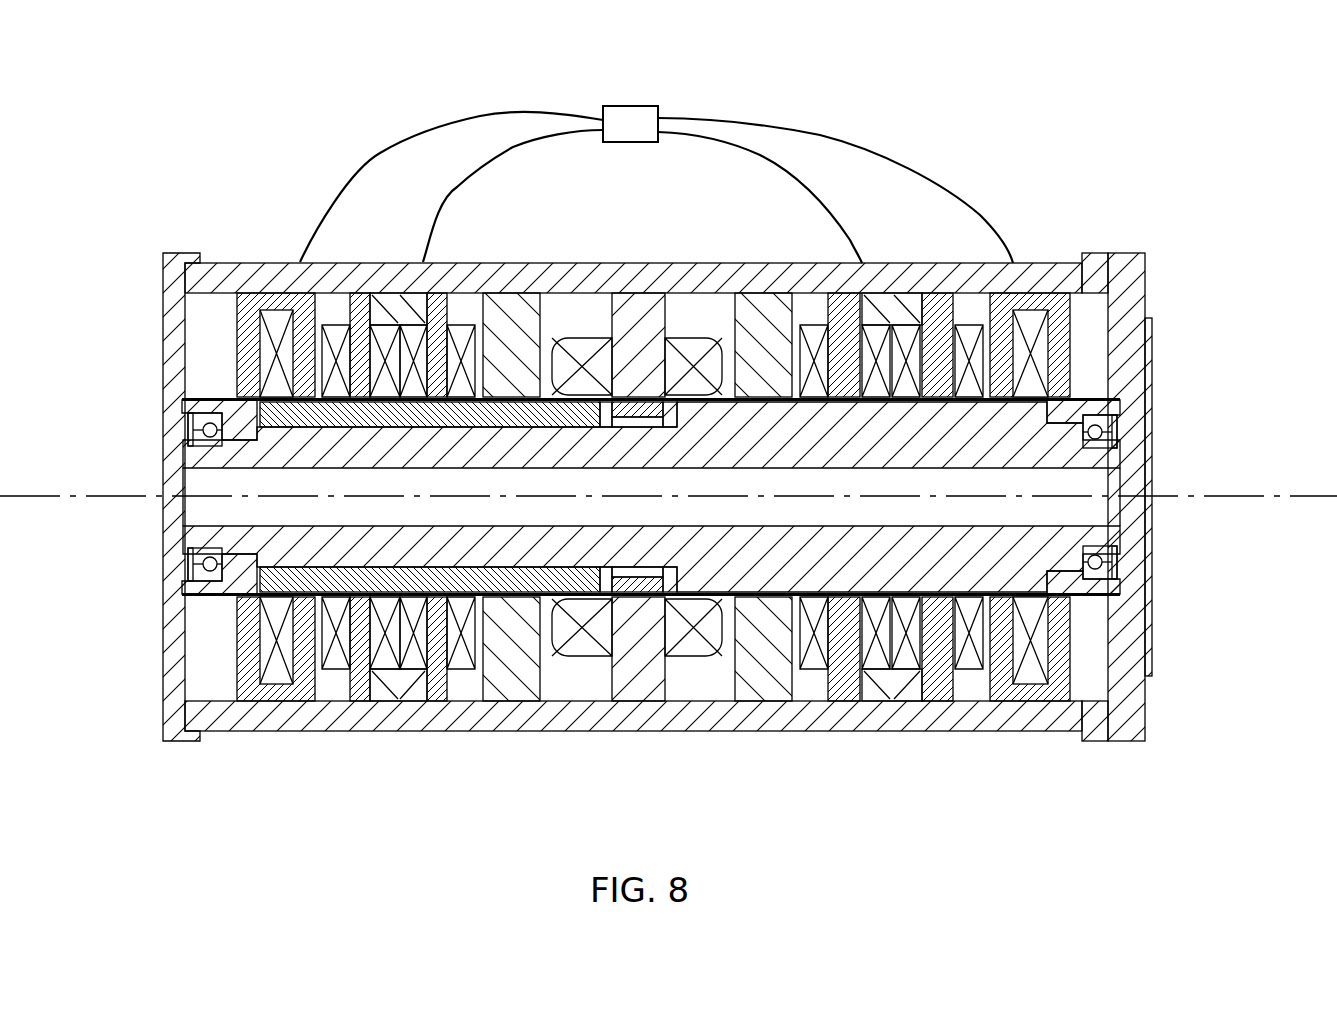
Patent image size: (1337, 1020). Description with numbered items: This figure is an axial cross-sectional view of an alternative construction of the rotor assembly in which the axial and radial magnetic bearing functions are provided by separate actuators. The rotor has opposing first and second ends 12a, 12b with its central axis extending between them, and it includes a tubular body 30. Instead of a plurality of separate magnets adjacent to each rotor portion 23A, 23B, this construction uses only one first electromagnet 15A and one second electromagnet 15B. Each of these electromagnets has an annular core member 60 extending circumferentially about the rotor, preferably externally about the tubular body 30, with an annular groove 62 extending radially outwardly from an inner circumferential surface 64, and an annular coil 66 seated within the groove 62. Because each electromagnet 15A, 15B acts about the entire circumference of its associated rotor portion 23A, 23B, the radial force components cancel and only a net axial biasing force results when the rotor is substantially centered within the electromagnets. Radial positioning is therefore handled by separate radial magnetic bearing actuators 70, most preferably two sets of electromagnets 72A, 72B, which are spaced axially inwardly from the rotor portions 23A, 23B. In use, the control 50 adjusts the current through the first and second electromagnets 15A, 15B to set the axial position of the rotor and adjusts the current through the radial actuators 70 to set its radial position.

The first end 12a is at (180, 443).
The second end 12b is at (1122, 455).
The first electromagnet 15A is at (258, 278).
The second electromagnet 15B is at (1023, 283).
The first rotor portion 23A is at (275, 418).
The second rotor portion 23B is at (1030, 421).
The tubular body 30 is at (468, 410).
The control 50 is at (618, 106).
The annular core member 60 is at (1060, 697).
The annular groove 62 is at (255, 762).
The inner circumferential surface 64 is at (238, 588).
The annular coil 66 is at (262, 651).
The radial magnetic bearing actuators 70 is at (415, 258).
The first set of electromagnets 72A is at (378, 273).
The second set of electromagnets 72B is at (920, 273).